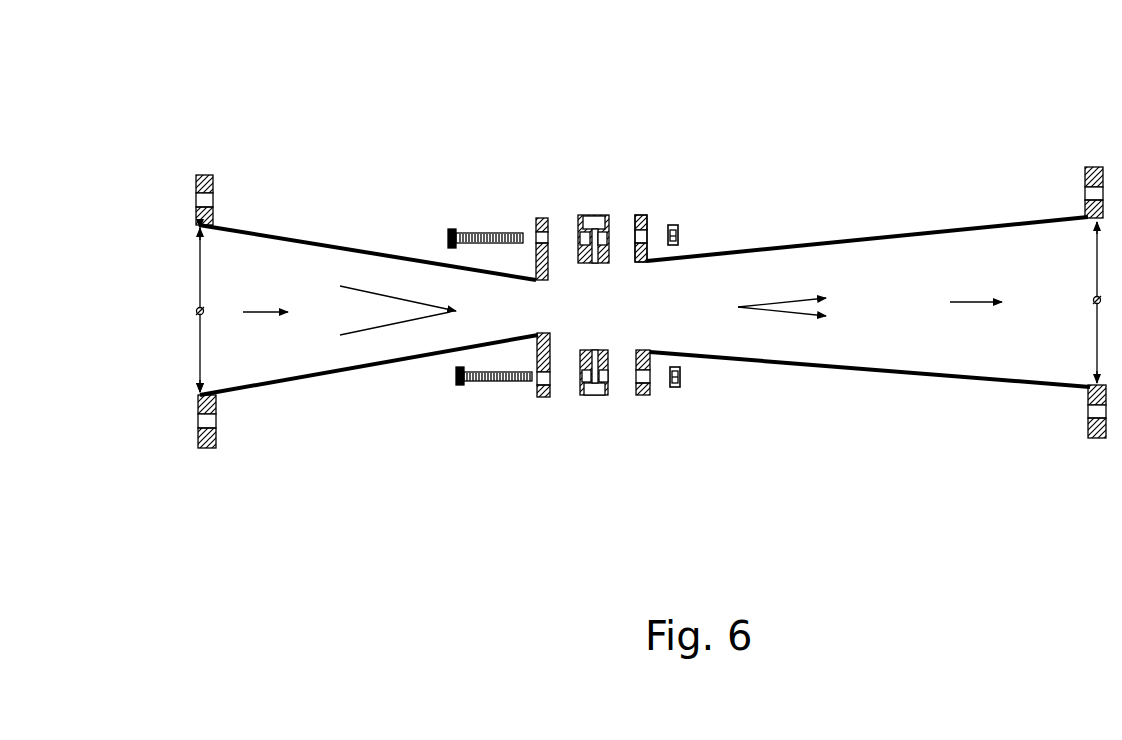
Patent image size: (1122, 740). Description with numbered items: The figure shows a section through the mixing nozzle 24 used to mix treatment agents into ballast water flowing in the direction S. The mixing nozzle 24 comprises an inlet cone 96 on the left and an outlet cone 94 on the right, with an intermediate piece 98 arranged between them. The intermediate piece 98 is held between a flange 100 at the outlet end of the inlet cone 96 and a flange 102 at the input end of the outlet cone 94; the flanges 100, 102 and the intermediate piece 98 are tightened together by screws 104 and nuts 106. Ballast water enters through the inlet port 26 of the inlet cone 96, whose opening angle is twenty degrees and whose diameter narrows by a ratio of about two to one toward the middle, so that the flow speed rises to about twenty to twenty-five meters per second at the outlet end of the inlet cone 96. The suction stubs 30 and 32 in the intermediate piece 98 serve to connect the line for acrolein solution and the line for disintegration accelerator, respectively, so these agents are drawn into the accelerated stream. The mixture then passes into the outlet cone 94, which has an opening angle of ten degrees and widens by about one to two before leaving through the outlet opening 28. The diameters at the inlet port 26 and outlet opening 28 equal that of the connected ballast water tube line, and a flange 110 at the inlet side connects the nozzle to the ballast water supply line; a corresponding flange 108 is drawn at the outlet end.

The mixing nozzle 24 is at (775, 455).
The inlet port 26 is at (203, 260).
The outlet opening 28 is at (1087, 288).
The suction stub 30 is at (597, 401).
The suction stub 32 is at (592, 207).
The outlet cone 94 is at (725, 252).
The inlet cone 96 is at (350, 372).
The intermediate piece 98 is at (608, 258).
The flange 100 is at (540, 398).
The flange 102 is at (640, 397).
The screws 104 is at (457, 230).
The nuts 106 is at (672, 225).
The outlet flange 108 is at (1080, 193).
The flange 110 is at (214, 196).